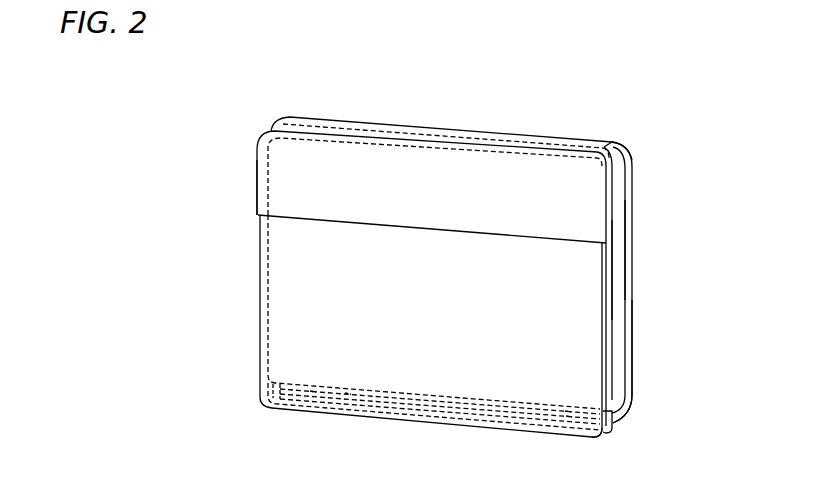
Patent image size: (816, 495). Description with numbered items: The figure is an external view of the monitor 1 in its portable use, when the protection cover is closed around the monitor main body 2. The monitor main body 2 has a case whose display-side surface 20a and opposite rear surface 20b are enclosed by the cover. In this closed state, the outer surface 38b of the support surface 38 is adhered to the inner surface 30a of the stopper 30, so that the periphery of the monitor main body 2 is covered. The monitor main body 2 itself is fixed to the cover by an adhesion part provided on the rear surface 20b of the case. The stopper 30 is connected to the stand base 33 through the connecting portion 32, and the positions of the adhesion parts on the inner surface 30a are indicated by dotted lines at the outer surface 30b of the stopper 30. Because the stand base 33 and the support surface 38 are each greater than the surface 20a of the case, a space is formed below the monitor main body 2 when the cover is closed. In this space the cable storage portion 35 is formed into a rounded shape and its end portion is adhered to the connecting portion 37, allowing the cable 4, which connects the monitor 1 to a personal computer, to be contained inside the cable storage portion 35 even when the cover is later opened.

The monitor 1 is at (448, 97).
The monitor main body 2 is at (620, 305).
The cable 4 is at (632, 410).
The surface 20a is at (612, 277).
The rear surface 20b is at (628, 237).
The stopper 30 is at (612, 207).
The inner surface 30a is at (257, 189).
The outer surface 30b is at (275, 155).
The connecting portion 32 is at (627, 149).
The stand base 33 is at (632, 350).
The cable storage portion 35 is at (613, 423).
The connecting portion 37 is at (607, 433).
The support surface 38 is at (260, 302).
The outer surface 38b is at (278, 263).